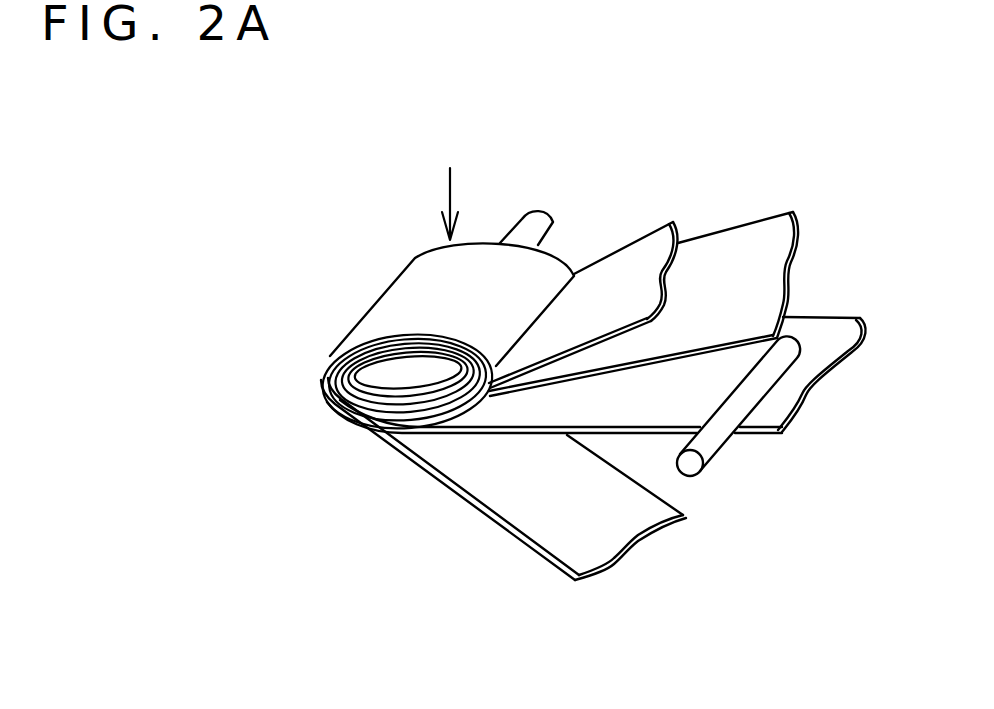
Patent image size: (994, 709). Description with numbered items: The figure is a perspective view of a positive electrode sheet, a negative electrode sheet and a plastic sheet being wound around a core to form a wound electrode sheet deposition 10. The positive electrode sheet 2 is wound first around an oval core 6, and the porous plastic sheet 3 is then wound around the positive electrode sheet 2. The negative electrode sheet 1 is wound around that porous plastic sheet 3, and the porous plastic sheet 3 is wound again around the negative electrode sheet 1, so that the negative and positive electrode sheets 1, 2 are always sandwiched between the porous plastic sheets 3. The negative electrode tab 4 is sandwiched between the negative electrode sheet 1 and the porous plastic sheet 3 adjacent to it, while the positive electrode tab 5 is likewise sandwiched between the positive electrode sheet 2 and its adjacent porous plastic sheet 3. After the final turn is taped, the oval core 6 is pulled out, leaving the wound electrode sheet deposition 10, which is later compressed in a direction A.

The negative electrode sheet 1 is at (823, 331).
The positive electrode sheet 2 is at (626, 242).
The porous plastic sheet 3 is at (725, 264).
The negative electrode tab 4 is at (715, 453).
The positive electrode tab 5 is at (503, 241).
The oval core 6 is at (327, 364).
The wound electrode sheet deposition 10 is at (305, 261).